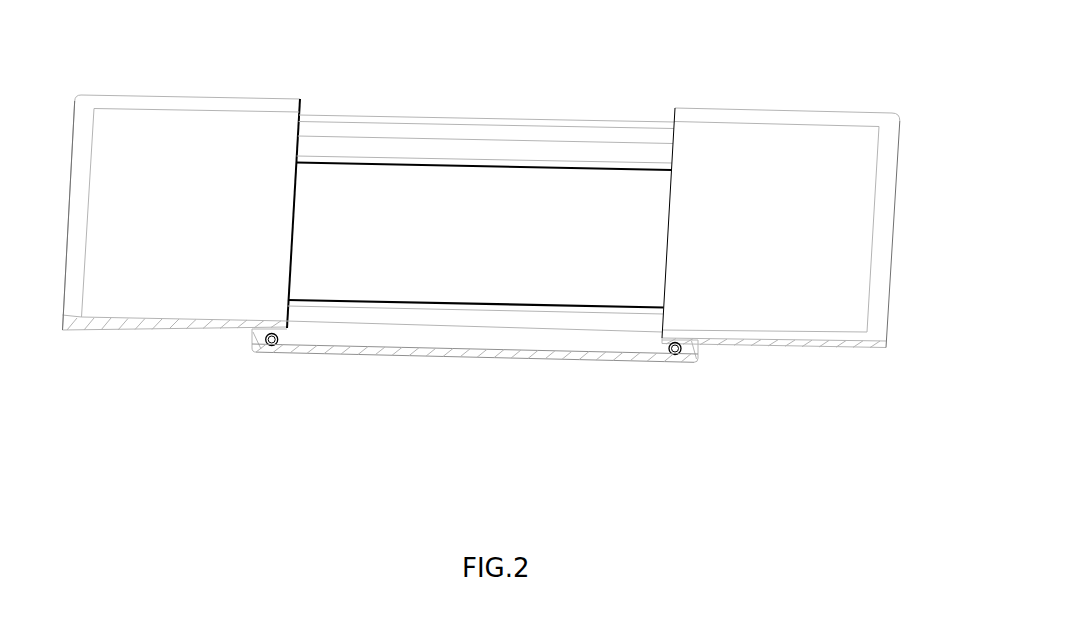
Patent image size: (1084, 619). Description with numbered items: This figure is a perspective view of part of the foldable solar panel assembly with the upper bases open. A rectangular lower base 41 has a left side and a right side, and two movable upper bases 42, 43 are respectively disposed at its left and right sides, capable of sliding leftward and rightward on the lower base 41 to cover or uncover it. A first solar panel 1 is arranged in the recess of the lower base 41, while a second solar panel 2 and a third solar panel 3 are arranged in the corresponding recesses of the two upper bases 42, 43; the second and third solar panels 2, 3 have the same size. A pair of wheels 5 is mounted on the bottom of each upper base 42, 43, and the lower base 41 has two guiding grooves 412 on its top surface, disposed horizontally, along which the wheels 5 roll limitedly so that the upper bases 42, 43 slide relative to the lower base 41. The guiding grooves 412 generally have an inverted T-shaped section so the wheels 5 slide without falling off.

The first solar panel 1 is at (523, 220).
The second solar panel 2 is at (177, 145).
The third solar panel 3 is at (758, 155).
The lower base 41 is at (457, 118).
The upper base 42 is at (113, 101).
The upper base 43 is at (857, 120).
The wheels 5 is at (258, 345).
The guiding grooves 412 is at (470, 340).